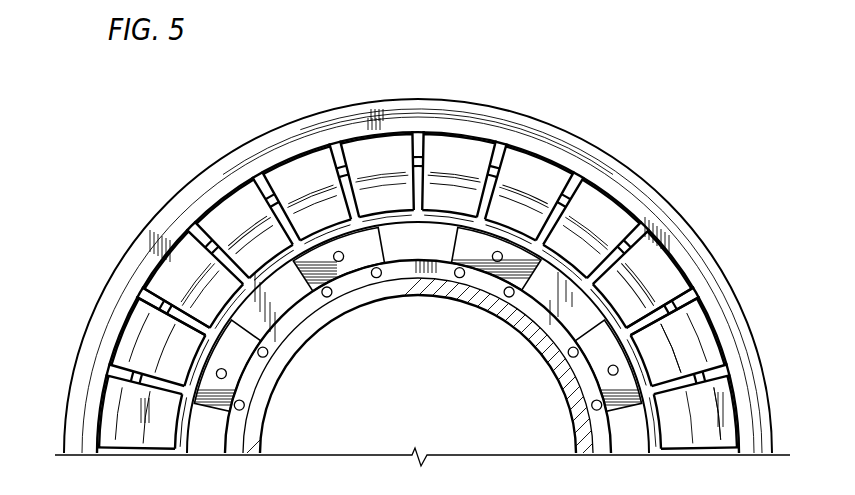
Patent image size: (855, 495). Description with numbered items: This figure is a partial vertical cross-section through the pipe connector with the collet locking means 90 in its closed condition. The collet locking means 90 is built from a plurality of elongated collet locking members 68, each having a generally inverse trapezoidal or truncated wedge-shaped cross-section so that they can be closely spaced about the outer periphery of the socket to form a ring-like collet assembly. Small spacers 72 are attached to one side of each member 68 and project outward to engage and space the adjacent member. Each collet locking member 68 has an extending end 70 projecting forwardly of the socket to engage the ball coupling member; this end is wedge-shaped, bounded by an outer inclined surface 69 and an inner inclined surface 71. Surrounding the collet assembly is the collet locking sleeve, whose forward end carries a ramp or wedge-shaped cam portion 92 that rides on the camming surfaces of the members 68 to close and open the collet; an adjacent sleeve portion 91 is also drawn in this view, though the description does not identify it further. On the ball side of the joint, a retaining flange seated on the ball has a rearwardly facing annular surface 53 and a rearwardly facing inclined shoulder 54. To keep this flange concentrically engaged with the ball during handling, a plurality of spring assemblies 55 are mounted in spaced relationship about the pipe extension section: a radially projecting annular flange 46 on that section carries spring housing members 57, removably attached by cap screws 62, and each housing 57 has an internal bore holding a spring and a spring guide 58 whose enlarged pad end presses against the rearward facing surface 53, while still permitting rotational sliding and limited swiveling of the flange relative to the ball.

The radially projecting annular flange 46 is at (416, 262).
The rearwardly facing annular surface 53 is at (397, 232).
The rearwardly facing inclined shoulder 54 is at (212, 252).
The spring assembly 55 is at (603, 345).
The spring housing member 57 is at (318, 257).
The spring guide 58 is at (341, 262).
The cap screw 62 is at (463, 280).
The collet locking member 68 is at (667, 237).
The outer inclined surface 69 is at (717, 402).
The extending end 70 is at (680, 323).
The inner inclined surface 71 is at (163, 433).
The spacer 72 is at (333, 142).
The collet locking means 90 is at (510, 108).
The casing liner 91 is at (593, 155).
The wedge-shaped cam portion 92 is at (553, 123).